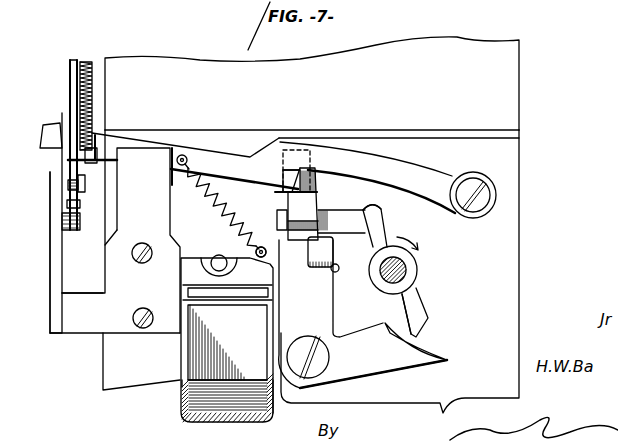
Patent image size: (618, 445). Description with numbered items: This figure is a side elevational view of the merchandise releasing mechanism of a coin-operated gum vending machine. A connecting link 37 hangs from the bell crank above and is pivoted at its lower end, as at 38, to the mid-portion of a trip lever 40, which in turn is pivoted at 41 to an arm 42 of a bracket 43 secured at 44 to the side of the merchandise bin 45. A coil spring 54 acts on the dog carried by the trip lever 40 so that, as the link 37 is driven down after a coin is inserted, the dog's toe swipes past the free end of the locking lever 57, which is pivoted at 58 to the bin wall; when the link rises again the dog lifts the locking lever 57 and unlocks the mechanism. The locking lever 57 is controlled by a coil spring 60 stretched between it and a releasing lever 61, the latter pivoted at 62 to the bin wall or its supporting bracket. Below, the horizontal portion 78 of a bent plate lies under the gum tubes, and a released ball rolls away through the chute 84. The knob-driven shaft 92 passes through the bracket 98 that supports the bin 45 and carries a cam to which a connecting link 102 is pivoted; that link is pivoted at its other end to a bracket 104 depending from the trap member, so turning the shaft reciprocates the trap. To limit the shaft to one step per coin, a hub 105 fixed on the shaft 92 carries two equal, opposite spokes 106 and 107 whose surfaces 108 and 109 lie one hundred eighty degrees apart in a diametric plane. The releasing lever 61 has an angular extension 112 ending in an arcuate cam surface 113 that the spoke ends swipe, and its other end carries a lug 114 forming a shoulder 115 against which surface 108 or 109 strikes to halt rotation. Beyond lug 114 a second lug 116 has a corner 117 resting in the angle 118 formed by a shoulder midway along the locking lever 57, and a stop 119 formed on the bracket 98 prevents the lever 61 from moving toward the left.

The connecting link 37 is at (68, 68).
The pivot 38 is at (72, 182).
The trip lever 40 is at (68, 160).
The pivot 41 is at (62, 220).
The arm 42 is at (53, 255).
The bracket 43 is at (78, 333).
The fastening 44 is at (146, 308).
The merchandise bin 45 is at (115, 377).
The coil spring 54 is at (92, 85).
The locking lever 57 is at (204, 153).
The pivot 58 is at (483, 206).
The coil spring 60 is at (227, 214).
The releasing lever 61 is at (317, 303).
The pivot 62 is at (323, 372).
The horizontal portion 78 is at (242, 293).
The chute 84 is at (203, 360).
The shaft 92 is at (407, 273).
The bracket 98 is at (512, 263).
The connecting link 102 is at (245, 268).
The bracket 104 is at (177, 243).
The hub 105 is at (415, 260).
The spoke 106 is at (371, 207).
The spoke 107 is at (423, 332).
The surface 108 is at (383, 227).
The surface 109 is at (404, 312).
The extension 112 is at (387, 372).
The arcuate cam surface 113 is at (437, 348).
The lug 114 is at (309, 262).
The shoulder 115 is at (340, 262).
The second lug 116 is at (305, 202).
The corner 117 is at (288, 194).
The angle 118 is at (287, 173).
The stop 119 is at (278, 213).